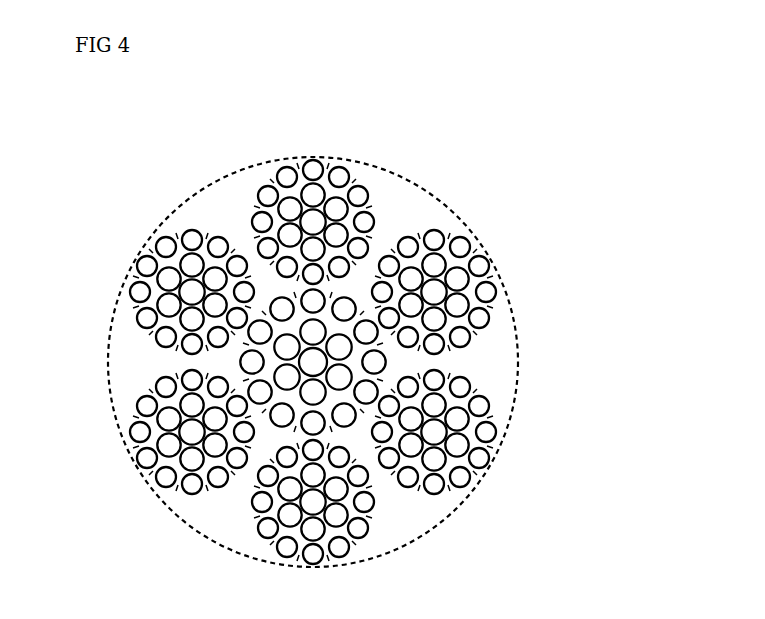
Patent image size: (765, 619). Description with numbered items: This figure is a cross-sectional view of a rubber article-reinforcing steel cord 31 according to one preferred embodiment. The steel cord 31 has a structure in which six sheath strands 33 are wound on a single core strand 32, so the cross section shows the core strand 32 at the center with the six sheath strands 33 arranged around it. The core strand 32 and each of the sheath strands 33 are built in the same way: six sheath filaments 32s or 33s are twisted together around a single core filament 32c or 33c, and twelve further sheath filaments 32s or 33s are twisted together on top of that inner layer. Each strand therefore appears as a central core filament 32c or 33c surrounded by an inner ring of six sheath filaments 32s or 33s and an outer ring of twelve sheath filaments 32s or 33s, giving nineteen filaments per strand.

The steel cord 31 is at (377, 341).
The core strand 32 is at (443, 361).
The core filament 32c is at (450, 371).
The sheath filaments 32s is at (611, 365).
The sheath strands 33 is at (498, 292).
The core filament 33c is at (502, 284).
The sheath filaments 33s is at (478, 249).